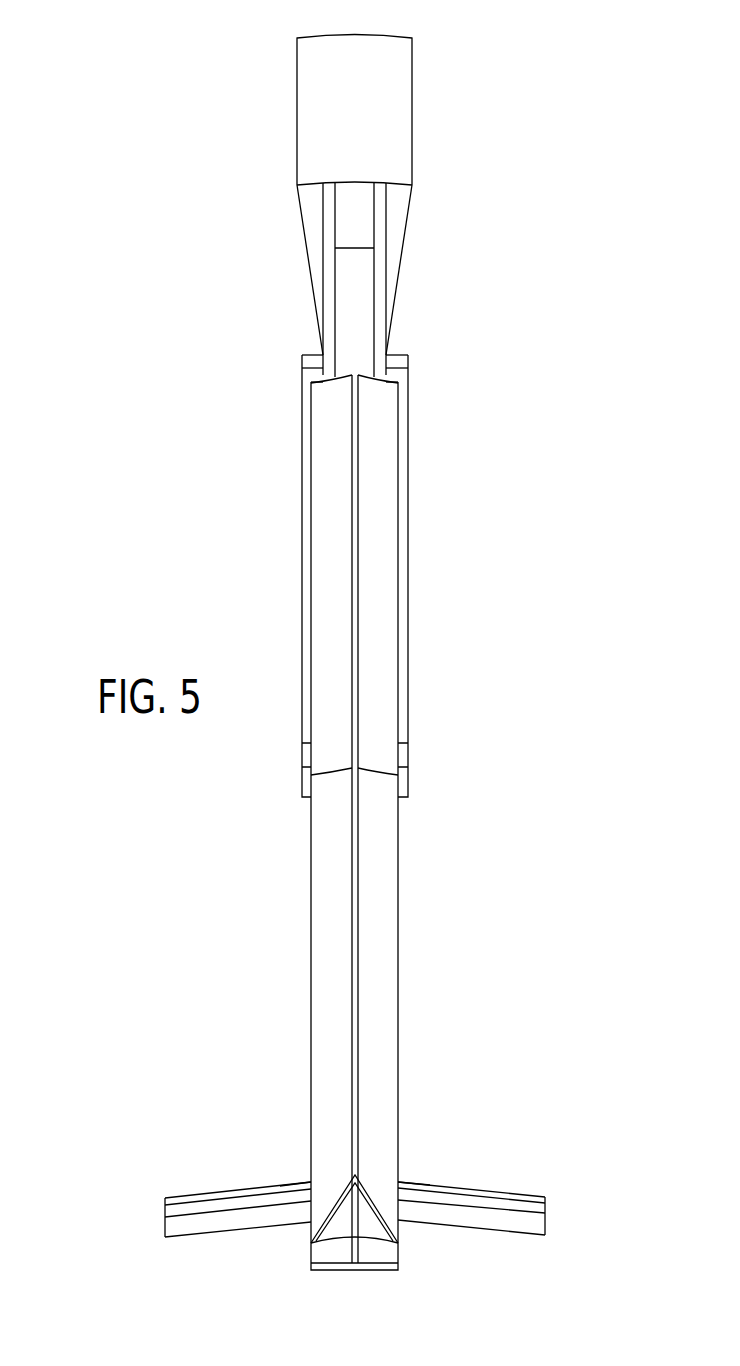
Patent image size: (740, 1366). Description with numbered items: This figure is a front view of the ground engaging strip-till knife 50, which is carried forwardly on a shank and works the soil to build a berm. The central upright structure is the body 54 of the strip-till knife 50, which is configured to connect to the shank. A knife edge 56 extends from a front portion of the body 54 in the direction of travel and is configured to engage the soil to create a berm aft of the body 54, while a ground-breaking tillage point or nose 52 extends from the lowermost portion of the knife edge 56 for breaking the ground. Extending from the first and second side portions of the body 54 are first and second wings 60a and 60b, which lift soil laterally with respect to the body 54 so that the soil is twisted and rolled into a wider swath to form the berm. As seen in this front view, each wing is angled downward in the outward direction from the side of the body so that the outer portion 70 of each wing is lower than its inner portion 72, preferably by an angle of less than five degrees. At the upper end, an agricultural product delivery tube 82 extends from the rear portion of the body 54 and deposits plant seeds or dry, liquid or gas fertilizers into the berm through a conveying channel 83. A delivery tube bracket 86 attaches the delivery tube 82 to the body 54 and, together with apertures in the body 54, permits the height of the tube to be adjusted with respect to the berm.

The strip-till knife 50 is at (592, 165).
The nose 52 is at (355, 1250).
The body 54 is at (358, 300).
The knife edge 56 is at (355, 913).
The first wing 60a is at (222, 1188).
The second wing 60b is at (487, 1188).
The outer portion 70 is at (165, 1213).
The inner portion 72 is at (290, 1195).
The agricultural product delivery tube 82 is at (259, 237).
The conveying channel 83 is at (392, 96).
The delivery tube bracket 86 is at (400, 360).